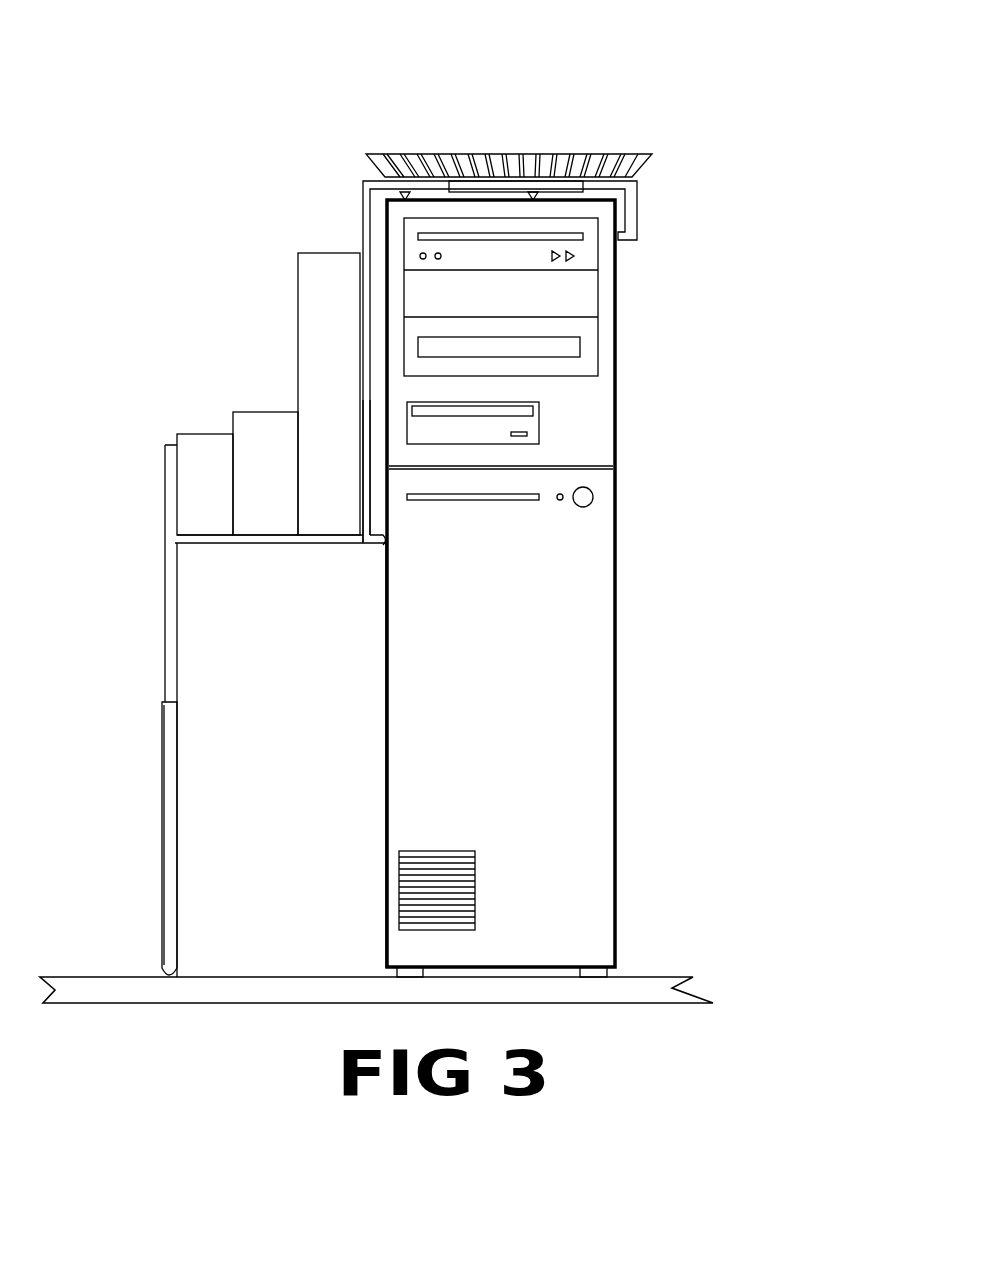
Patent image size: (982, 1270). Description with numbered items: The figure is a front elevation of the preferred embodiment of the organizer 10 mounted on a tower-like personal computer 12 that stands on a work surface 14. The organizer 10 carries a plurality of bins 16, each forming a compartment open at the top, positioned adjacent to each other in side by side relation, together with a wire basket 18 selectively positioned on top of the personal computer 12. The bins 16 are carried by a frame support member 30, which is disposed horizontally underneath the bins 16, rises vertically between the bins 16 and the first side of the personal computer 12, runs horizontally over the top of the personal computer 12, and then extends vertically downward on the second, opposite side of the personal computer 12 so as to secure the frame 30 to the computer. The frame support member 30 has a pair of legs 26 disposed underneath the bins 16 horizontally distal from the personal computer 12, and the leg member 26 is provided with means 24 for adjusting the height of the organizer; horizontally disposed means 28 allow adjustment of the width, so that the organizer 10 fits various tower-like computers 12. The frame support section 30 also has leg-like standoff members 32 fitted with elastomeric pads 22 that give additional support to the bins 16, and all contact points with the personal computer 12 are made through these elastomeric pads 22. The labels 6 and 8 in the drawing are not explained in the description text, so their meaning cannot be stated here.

The computer 6 is at (690, 288).
The peripheral unit 8 is at (257, 855).
The organizer 10 is at (215, 294).
The personal computer 12 is at (607, 658).
The work surface 14 is at (647, 992).
The bins 16 is at (327, 263).
The wire basket 18 is at (403, 153).
The elastomeric pads 22 is at (622, 238).
The means for adjusting the height 24 is at (172, 779).
The leg member 26 is at (176, 634).
The means for adjusting the width 28 is at (487, 177).
The frame support member 30 is at (218, 543).
The standoff members 32 is at (358, 543).